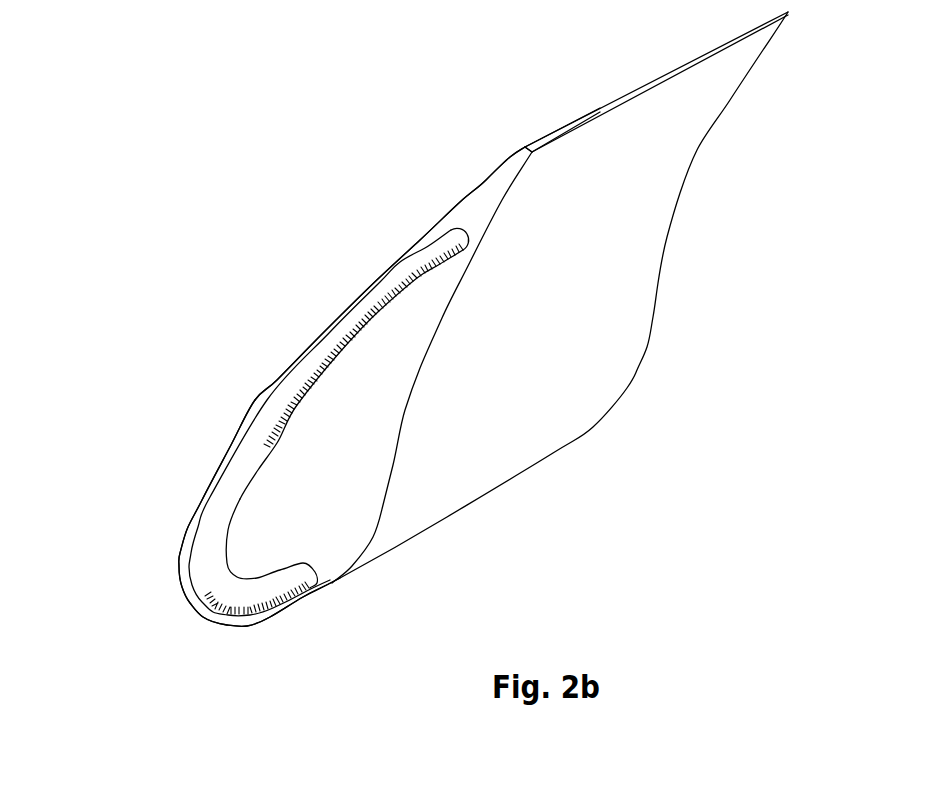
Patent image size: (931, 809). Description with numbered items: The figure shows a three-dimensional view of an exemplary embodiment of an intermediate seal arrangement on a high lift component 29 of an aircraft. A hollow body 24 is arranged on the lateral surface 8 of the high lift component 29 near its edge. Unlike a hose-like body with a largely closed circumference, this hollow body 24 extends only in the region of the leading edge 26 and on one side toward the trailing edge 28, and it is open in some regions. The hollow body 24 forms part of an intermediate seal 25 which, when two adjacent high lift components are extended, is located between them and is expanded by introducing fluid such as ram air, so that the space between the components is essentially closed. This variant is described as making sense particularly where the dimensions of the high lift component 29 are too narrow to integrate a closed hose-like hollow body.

The lateral surface 8 is at (345, 510).
The hollow body 24 is at (240, 468).
The intermediate seal 25 is at (252, 544).
The leading edge 26 is at (186, 632).
The trailing edge 28 is at (507, 134).
The high lift component 29 is at (323, 262).